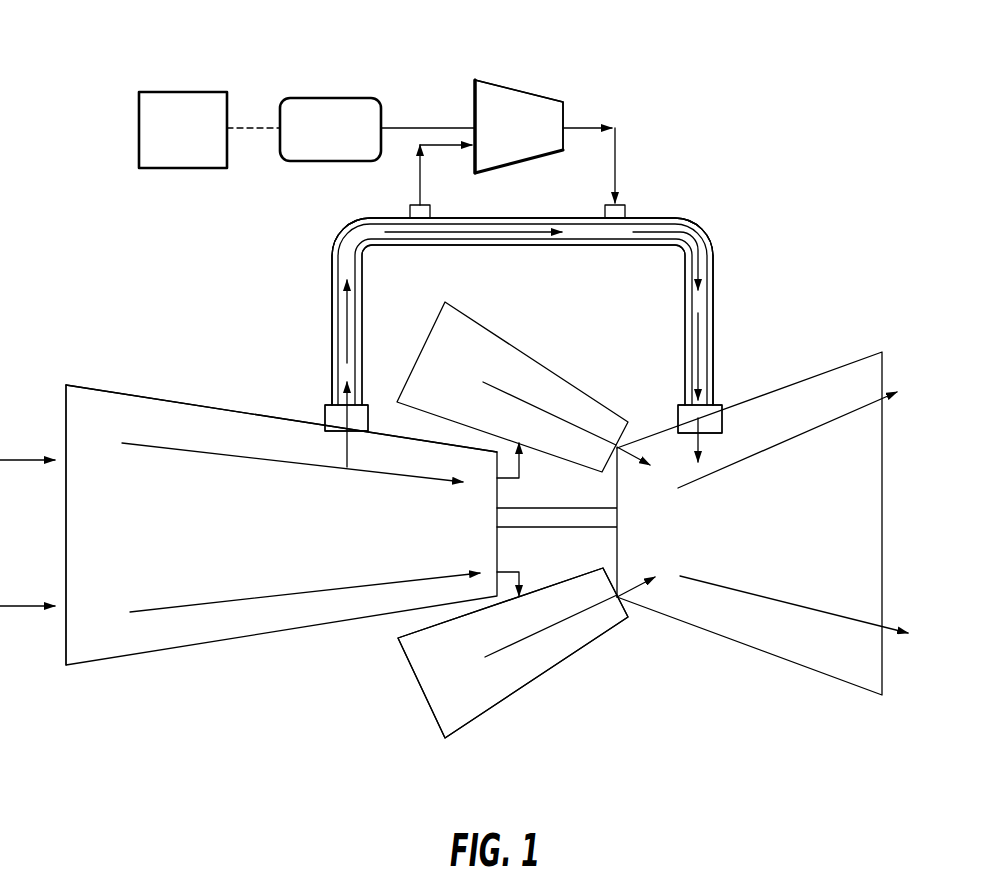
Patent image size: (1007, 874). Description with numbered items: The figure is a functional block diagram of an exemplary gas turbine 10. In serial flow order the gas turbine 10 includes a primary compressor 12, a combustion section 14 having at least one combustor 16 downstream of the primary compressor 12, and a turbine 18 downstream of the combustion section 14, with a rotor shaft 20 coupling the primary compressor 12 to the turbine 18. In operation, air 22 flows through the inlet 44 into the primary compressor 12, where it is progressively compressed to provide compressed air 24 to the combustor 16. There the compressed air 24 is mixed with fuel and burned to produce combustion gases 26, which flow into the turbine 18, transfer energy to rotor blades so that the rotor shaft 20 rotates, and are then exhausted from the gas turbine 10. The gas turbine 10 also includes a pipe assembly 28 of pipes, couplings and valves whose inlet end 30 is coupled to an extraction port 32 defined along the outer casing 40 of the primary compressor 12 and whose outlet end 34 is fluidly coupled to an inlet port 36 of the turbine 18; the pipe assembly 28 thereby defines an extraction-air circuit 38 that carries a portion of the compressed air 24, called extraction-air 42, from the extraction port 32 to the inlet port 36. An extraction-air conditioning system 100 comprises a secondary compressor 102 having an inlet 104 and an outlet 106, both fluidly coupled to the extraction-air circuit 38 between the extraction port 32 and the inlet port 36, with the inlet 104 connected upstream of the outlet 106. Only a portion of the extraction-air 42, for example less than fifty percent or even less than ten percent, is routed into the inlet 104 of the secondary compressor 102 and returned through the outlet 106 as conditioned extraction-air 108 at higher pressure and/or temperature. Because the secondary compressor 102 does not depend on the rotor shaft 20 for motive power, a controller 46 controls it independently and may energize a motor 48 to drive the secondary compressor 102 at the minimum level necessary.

The gas turbine 10 is at (595, 287).
The primary compressor 12 is at (281, 551).
The combustion section 14 is at (513, 681).
The combustor 16 is at (512, 519).
The turbine 18 is at (749, 535).
The rotor shaft 20 is at (557, 522).
The air 22 is at (27, 508).
The compressed air 24 is at (347, 527).
The combustion gases 26 is at (686, 544).
The pipe assembly 28 is at (522, 311).
The inlet end 30 is at (319, 399).
The extraction port 32 is at (371, 421).
The outlet end 34 is at (725, 389).
The inlet port 36 is at (674, 405).
The extraction-air circuit 38 is at (520, 311).
The outer casing 40 is at (281, 399).
The extraction-air 42 is at (522, 309).
The inlet 44 is at (33, 525).
The controller 46 is at (209, 130).
The motor 48 is at (377, 129).
The extraction-air conditioning system 100 is at (522, 88).
The secondary compressor 102 is at (519, 126).
The inlet 104 is at (456, 144).
The outlet 106 is at (585, 109).
The conditioned extraction-air 108 is at (619, 173).